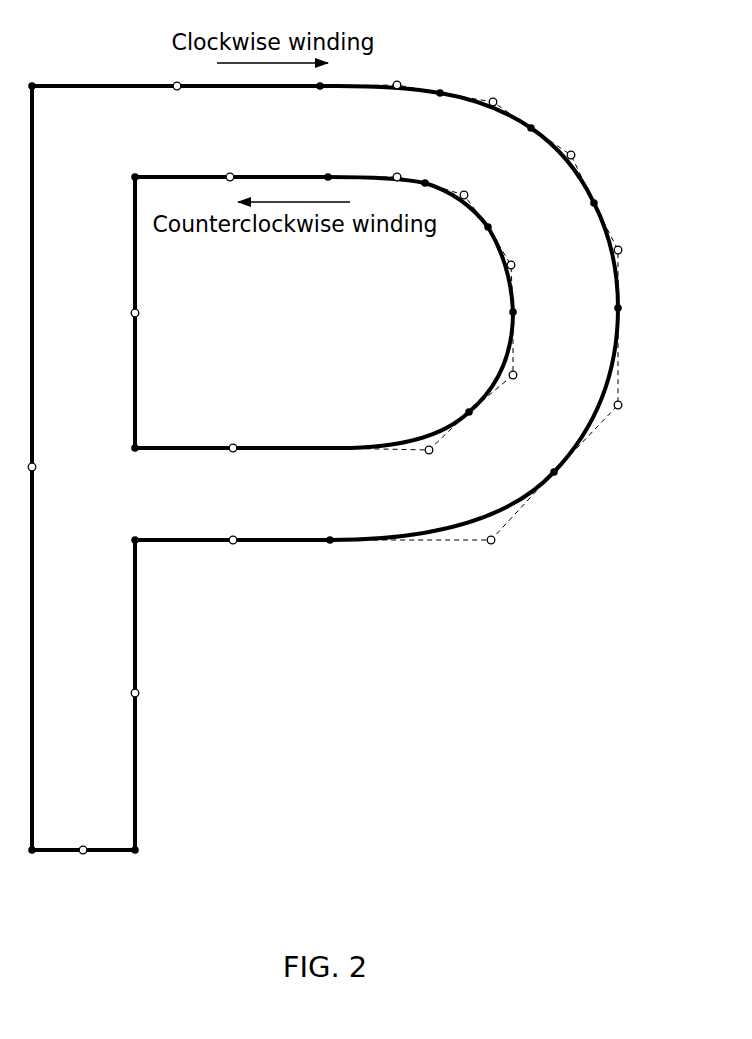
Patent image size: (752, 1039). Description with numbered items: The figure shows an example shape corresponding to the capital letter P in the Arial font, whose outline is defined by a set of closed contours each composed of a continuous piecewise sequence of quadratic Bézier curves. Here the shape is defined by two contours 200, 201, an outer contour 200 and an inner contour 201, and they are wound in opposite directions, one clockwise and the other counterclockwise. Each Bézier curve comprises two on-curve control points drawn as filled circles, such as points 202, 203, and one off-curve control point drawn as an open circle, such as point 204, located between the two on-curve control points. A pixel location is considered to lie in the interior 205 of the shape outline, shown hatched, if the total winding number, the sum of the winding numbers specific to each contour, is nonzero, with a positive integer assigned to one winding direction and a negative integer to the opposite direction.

The contour 200 is at (83, 84).
The contour 201 is at (277, 445).
The on-curve control point 202 is at (328, 547).
The on-curve control point 203 is at (558, 478).
The off-curve control point 204 is at (493, 547).
The interior 205 is at (168, 504).